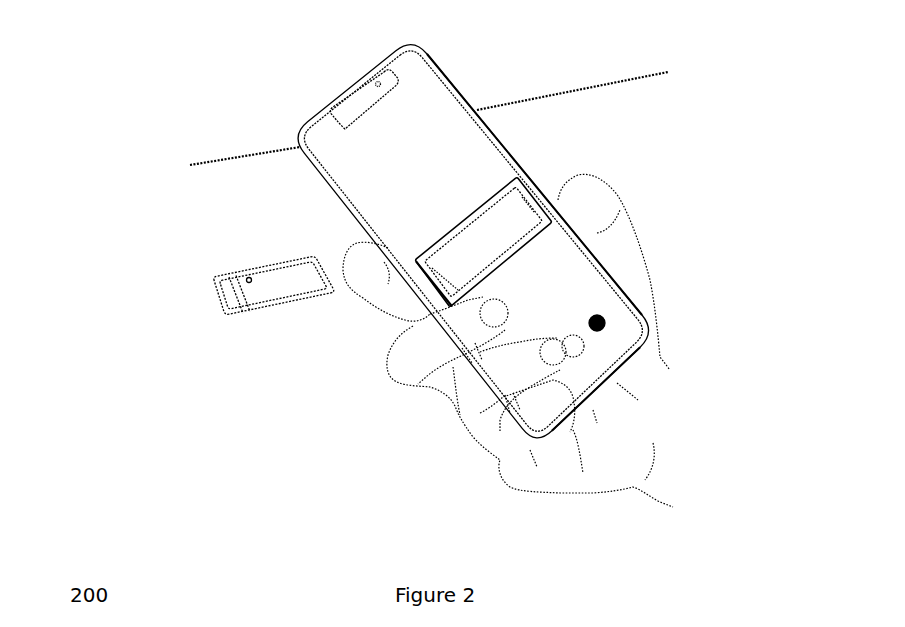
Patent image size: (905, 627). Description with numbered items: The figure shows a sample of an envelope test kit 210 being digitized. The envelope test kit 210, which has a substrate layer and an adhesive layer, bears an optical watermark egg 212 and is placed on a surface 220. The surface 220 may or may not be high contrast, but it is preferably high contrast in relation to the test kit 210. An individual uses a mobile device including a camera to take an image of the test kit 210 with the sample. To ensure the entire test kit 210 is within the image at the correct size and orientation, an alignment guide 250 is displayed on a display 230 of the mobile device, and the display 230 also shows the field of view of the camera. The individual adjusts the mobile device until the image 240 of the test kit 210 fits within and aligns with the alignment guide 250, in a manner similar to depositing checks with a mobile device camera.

The envelope test kit 210 is at (225, 291).
The optical watermark egg 212 is at (247, 278).
The surface 220 is at (263, 178).
The display 230 is at (432, 99).
The image 240 is at (525, 213).
The alignment guide 250 is at (513, 252).